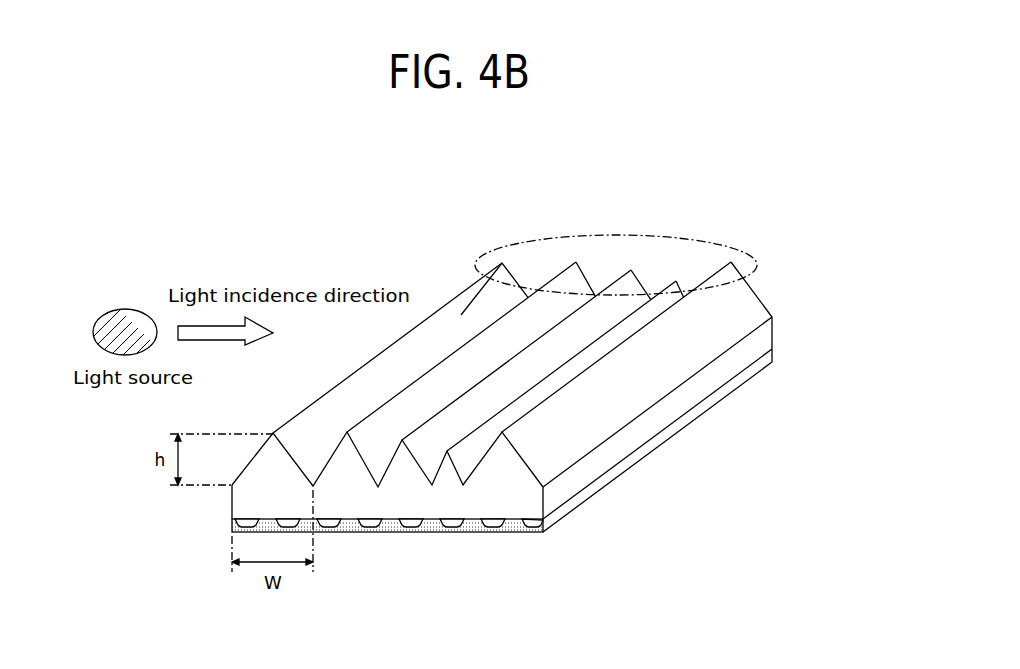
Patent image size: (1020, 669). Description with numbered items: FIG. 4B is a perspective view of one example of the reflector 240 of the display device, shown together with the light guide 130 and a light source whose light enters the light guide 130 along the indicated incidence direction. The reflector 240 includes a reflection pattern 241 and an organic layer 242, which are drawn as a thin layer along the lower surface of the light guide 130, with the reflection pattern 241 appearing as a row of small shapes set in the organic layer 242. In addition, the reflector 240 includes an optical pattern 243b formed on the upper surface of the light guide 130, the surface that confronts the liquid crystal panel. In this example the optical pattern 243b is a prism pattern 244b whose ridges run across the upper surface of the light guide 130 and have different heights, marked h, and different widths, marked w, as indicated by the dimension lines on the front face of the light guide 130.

The light guide 130 is at (690, 392).
The reflector 240 is at (502, 493).
The reflection pattern 241 is at (485, 593).
The organic layer 242 is at (468, 526).
The optical pattern 243b is at (692, 243).
The prism pattern 244b is at (567, 420).